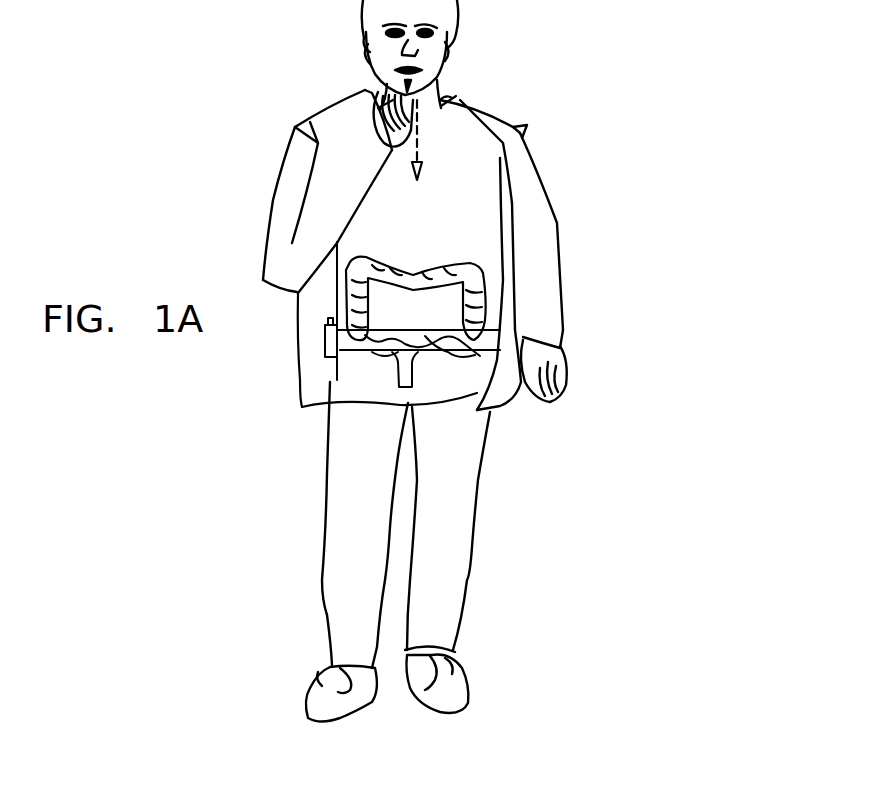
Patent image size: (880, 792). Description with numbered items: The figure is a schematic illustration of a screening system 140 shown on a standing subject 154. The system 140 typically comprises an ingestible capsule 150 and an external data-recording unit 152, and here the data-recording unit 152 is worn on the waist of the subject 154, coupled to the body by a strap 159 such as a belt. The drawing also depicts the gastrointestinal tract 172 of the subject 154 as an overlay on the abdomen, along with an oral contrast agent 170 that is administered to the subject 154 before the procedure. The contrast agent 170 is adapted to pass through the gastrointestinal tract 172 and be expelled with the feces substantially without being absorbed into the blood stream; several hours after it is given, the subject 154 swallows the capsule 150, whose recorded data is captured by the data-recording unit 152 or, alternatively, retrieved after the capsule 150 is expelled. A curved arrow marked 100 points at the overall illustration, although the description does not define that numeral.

The wearable organ visualization system 100 is at (697, 248).
The screening system 140 is at (445, 252).
The ingestible capsule 150 is at (437, 276).
The external data-recording unit 152 is at (325, 330).
The subject 154 is at (452, 98).
The strap 159 is at (490, 412).
The oral contrast agent 170 is at (392, 378).
The gastrointestinal (GI) tract 172 is at (388, 362).